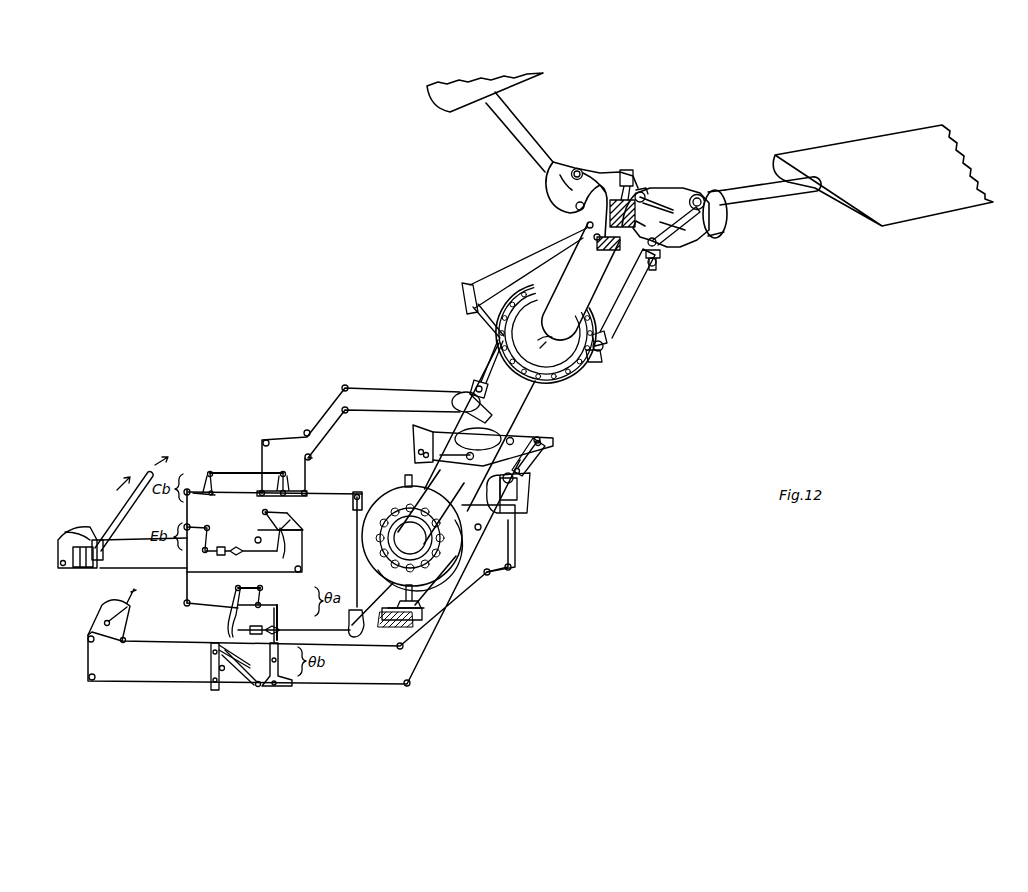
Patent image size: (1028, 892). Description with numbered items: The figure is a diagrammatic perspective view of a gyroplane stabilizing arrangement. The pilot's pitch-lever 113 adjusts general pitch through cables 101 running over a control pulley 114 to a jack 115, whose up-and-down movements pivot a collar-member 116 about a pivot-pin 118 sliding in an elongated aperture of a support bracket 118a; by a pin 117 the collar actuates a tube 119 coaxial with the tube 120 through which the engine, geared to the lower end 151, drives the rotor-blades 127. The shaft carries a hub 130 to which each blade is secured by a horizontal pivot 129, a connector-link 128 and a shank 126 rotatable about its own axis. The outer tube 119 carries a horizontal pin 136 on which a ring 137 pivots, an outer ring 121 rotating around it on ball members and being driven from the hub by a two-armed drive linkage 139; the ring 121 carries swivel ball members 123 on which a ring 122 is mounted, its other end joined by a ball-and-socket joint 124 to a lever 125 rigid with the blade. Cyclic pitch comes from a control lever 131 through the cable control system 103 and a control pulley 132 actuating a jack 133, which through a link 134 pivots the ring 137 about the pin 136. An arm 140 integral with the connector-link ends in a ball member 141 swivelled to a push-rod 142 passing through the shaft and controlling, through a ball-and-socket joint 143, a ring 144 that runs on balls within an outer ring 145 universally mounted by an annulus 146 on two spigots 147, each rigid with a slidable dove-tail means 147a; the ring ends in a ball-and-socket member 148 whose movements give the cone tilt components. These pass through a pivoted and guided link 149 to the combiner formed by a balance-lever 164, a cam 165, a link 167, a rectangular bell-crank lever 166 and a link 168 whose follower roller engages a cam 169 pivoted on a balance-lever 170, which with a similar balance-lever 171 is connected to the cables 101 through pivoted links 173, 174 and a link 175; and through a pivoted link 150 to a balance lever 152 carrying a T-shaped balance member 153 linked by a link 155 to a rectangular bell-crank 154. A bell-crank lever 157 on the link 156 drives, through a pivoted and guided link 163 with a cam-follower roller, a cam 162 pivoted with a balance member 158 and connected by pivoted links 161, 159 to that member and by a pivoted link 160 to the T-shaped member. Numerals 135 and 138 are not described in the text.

The cables 101 is at (348, 674).
The control system 103 is at (100, 573).
The pitch-lever 113 is at (100, 613).
The control pulley 114 is at (500, 508).
The jack 115 is at (525, 486).
The collar-member 116 is at (545, 452).
The pin 117 is at (527, 469).
The pivot-pin 118 is at (414, 452).
The support bracket 118a is at (414, 433).
The tube 119 is at (516, 400).
The tube 120 is at (598, 270).
The outer ring 121 is at (575, 378).
The ring 122 is at (627, 300).
The swivel ball members 123 is at (548, 343).
The ball-and-socket joint 124 is at (660, 264).
The lever 125 is at (718, 228).
The shank 126 is at (766, 201).
The rotor-blade 127 is at (875, 198).
The connector-link 128 is at (683, 200).
The horizontal pivot 129 is at (690, 245).
The hub 130 is at (644, 205).
The control lever 131 is at (122, 502).
The control pulley 132 is at (462, 396).
The jack 133 is at (476, 386).
The link 134 is at (494, 359).
The link rod 135 is at (497, 323).
The pin 136 is at (612, 352).
The ring 137 is at (610, 348).
The ball end 138 is at (603, 324).
The two-armed drive linkage 139 is at (488, 304).
The arm 140 is at (658, 212).
The ball member 141 is at (624, 170).
The push-rod 142 is at (618, 170).
The ball-and-socket joint 143 is at (440, 538).
The ring 144 is at (445, 548).
The outer ring 145 is at (437, 556).
The annulus 146 is at (420, 583).
The spigots 147 is at (406, 481).
The slidable dove-tail means 147a is at (425, 613).
The ball-and-socket member 148 is at (380, 628).
The pivoted and guided link 149 is at (337, 628).
The pivoted link 150 is at (352, 602).
The lower end 151 is at (430, 482).
The balance lever 152 is at (328, 493).
The T-shaped balance member 153 is at (285, 471).
The rectangular bell-crank 154 is at (208, 486).
The link 155 is at (245, 471).
The link 156 is at (190, 586).
The bell-crank lever 157 is at (210, 530).
The balance member 158 is at (290, 537).
The pivoted link 159 is at (300, 527).
The pivoted link 160 is at (290, 512).
The pivoted link 161 is at (263, 511).
The cam 162 is at (282, 551).
The pivoted and guided link 163 is at (220, 556).
The balance-lever 164 is at (208, 607).
The cam 165 is at (236, 618).
The rectangular bell-crank lever 166 is at (262, 594).
The link 167 is at (250, 588).
The link 168 is at (279, 622).
The cam 169 is at (268, 684).
The balance-lever 170 is at (262, 685).
The balance-lever 171 is at (212, 683).
The pivoted link 173 is at (235, 670).
The pivoted link 174 is at (217, 652).
The link 175 is at (218, 667).